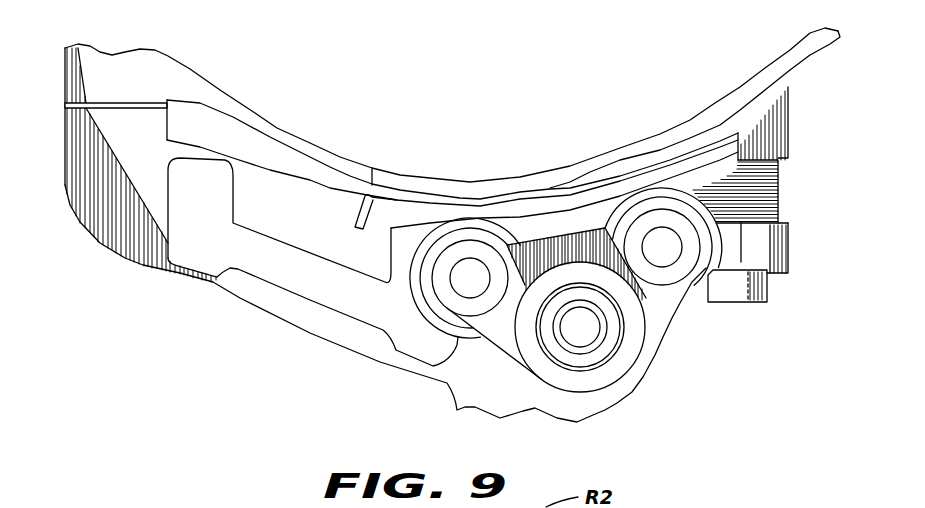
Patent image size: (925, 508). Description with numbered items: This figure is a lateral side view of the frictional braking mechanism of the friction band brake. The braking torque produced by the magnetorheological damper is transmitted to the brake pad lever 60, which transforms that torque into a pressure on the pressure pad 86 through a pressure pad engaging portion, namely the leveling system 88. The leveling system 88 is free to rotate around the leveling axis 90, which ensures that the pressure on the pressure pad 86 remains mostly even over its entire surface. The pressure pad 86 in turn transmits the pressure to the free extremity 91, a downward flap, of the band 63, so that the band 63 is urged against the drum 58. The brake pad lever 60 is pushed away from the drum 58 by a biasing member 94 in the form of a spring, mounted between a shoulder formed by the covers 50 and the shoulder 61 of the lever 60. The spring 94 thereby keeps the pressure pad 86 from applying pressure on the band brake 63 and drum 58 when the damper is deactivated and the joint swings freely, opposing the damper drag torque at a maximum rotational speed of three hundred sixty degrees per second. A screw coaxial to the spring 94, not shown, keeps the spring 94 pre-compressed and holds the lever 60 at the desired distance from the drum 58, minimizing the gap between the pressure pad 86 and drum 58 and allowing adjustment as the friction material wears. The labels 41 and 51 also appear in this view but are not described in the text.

The actuating assembly 41 is at (705, 331).
The bearing covers 50 is at (780, 138).
The edge surface 51 is at (783, 160).
The drum 58 is at (766, 84).
The brake pad lever 60 is at (97, 226).
The shoulder 61 is at (782, 222).
The band 63 is at (467, 200).
The pressure pad 86 is at (568, 204).
The leveling system 88 is at (652, 310).
The leveling axis 90 is at (598, 330).
The free extremity 91 is at (355, 224).
The biasing member 94 is at (783, 187).